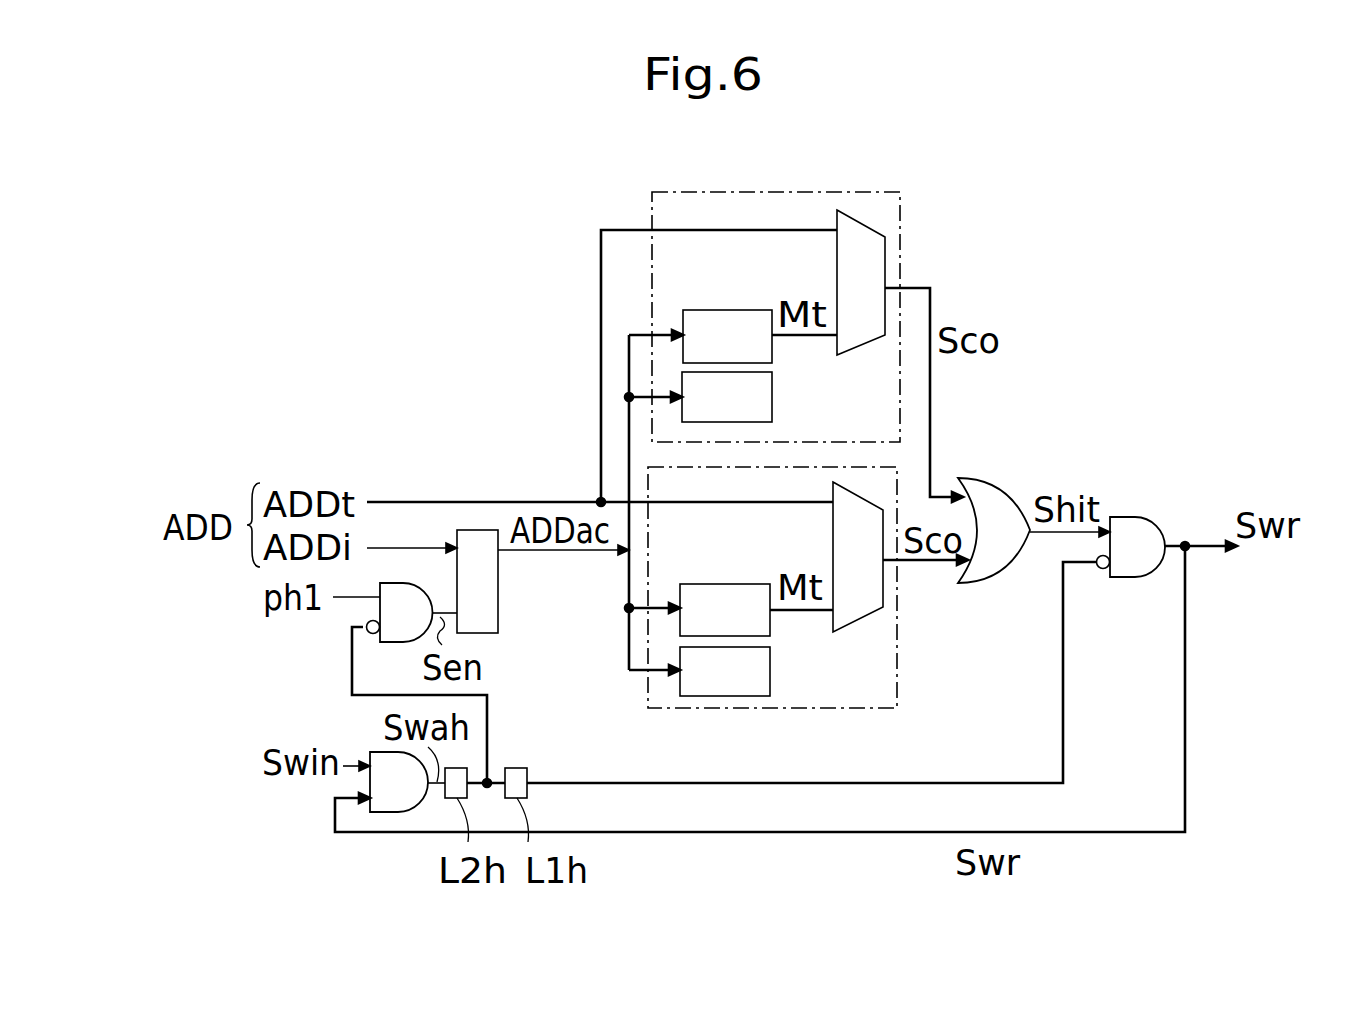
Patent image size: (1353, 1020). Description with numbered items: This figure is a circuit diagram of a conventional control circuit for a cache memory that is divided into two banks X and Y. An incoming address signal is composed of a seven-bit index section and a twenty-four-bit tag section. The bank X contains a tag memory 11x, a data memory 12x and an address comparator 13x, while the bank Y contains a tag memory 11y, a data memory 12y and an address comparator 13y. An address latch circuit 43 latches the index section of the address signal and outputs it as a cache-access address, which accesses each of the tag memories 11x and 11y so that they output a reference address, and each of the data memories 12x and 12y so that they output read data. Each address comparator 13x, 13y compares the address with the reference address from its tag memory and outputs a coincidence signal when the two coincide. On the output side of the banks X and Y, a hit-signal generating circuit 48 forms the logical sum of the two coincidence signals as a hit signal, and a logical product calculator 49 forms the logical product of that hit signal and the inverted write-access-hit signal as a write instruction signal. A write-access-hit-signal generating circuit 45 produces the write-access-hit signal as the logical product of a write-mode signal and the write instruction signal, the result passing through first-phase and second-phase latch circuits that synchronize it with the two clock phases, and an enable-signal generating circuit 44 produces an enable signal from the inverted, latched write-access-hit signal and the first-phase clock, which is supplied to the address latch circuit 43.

The tag memory 11x is at (700, 309).
The data memory 12x is at (772, 404).
The address comparator 13x is at (885, 254).
The tag memory 11y is at (700, 584).
The data memory 12y is at (770, 680).
The address comparator 13y is at (883, 602).
The address latch circuit 43 is at (498, 595).
The enable-signal generating circuit 44 is at (377, 613).
The write-access-hit-signal generating circuit 45 is at (393, 812).
The hit-signal generating circuit 48 is at (975, 478).
The logical product calculator 49 is at (1128, 517).
The bank X is at (901, 213).
The bank Y is at (897, 690).